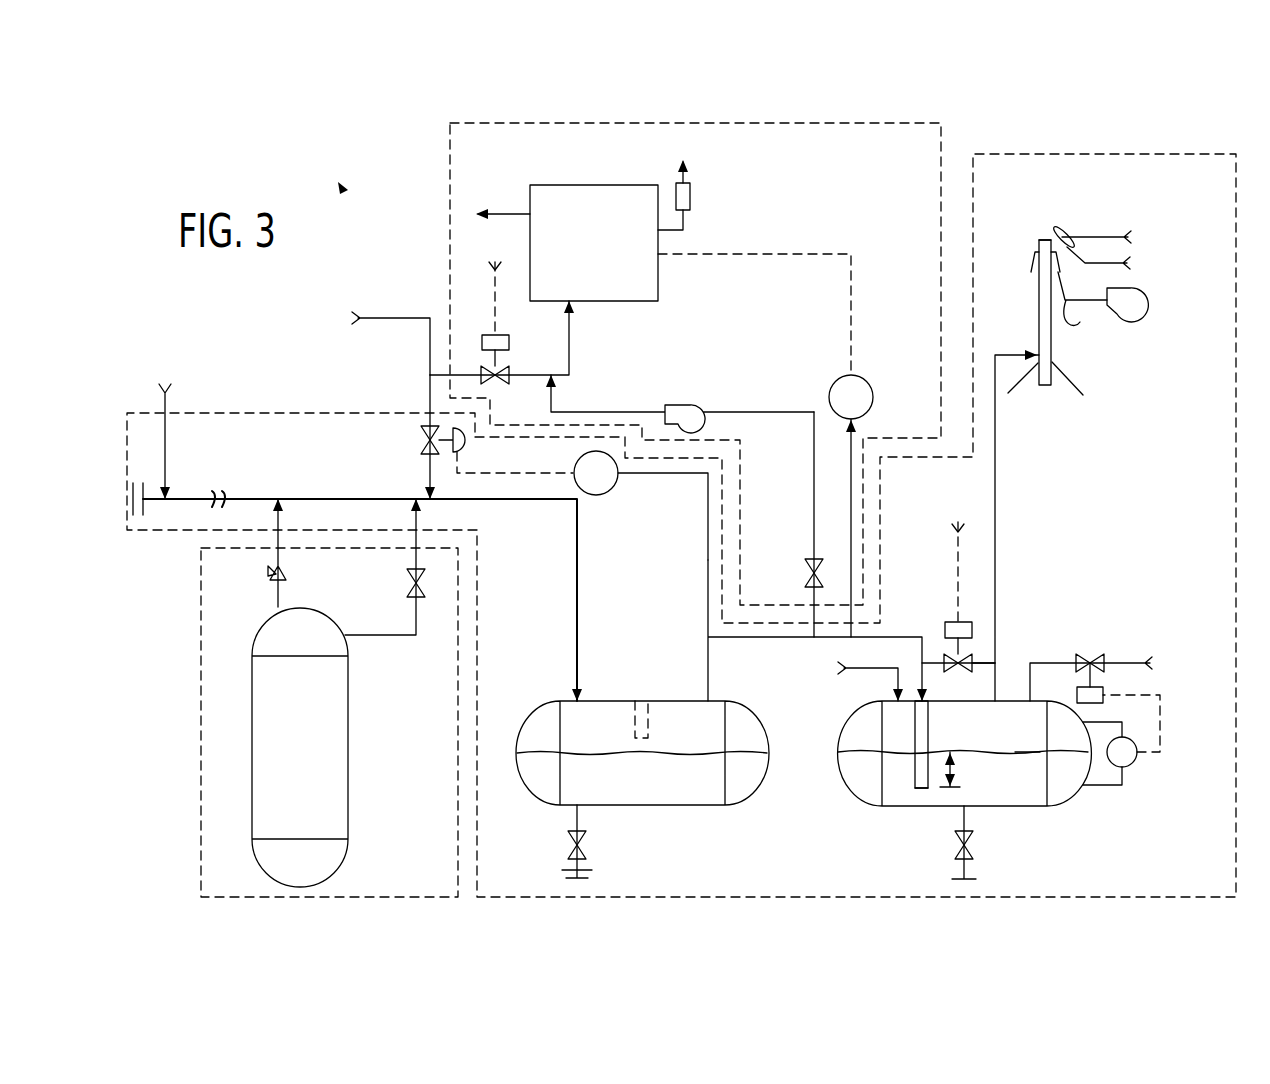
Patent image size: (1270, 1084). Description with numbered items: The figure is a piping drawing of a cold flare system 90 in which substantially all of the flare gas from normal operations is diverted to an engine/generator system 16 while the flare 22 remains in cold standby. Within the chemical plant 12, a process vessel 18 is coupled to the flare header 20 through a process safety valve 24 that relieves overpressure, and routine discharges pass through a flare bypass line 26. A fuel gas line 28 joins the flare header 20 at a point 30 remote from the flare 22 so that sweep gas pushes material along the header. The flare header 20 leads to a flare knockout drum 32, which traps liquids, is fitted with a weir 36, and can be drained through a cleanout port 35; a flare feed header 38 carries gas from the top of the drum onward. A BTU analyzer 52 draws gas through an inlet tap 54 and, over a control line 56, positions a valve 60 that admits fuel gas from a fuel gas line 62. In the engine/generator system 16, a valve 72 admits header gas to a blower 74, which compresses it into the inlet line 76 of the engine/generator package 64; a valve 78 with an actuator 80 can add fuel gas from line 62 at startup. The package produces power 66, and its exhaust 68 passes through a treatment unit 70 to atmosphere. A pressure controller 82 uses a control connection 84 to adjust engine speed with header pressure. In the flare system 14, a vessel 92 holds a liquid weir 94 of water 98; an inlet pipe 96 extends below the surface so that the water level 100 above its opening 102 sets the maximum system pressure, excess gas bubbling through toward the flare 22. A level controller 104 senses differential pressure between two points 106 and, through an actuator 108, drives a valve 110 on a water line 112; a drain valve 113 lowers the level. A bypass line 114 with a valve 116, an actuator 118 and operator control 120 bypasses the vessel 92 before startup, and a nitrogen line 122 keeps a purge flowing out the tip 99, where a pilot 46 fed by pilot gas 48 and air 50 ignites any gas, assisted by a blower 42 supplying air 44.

The chemical plant 12 is at (201, 645).
The flare system 14 is at (1255, 755).
The engine/generator system 16 is at (450, 152).
The process vessel 18 is at (348, 745).
The flare header 20 is at (375, 497).
The flare 22 is at (1038, 312).
The process safety valve 24 is at (298, 570).
The flare bypass line 26 is at (396, 640).
The fuel gas line 28 is at (166, 440).
The point 30 is at (165, 503).
The flare knockout drum 32 is at (567, 698).
The cleanout port 35 is at (590, 852).
The weir 36 is at (641, 698).
The flare feed header 38 is at (708, 660).
The blower 42 is at (1148, 305).
The air 44 is at (1080, 322).
The pilot 46 is at (1060, 236).
The pilot gas 48 is at (1085, 265).
The air 50 is at (1120, 235).
The BTU analyzer 52 is at (596, 495).
The inlet tap 54 is at (670, 478).
The control line 56 is at (533, 476).
The valve 60 is at (424, 440).
The fuel gas line 62 is at (430, 350).
The engine/generator package 64 is at (584, 176).
The power 66 is at (505, 210).
The exhaust 68 is at (665, 234).
The treatment unit 70 is at (690, 195).
The valve 72 is at (808, 580).
The blower 74 is at (677, 403).
The inlet line 76 is at (569, 345).
The valve 78 is at (500, 385).
The actuator 80 is at (509, 340).
The pressure controller 82 is at (873, 397).
The control connection 84 is at (851, 310).
The cold flare system 90 is at (342, 188).
The vessel 92 is at (848, 782).
The liquid weir 94 is at (958, 778).
The inlet pipe 96 is at (914, 778).
The water 98 is at (1010, 785).
The tip 99 is at (1042, 240).
The water level 100 is at (953, 768).
The opening 102 is at (921, 792).
The level controller 104 is at (1135, 762).
The points 106 is at (1085, 770).
The actuator 108 is at (1103, 690).
The valve 110 is at (1100, 655).
The water line 112 is at (1125, 660).
The drain valve 113 is at (968, 858).
The bypass line 114 is at (980, 667).
The valve 116 is at (975, 655).
The actuator 118 is at (945, 625).
The operator control 120 is at (958, 575).
The nitrogen line 122 is at (898, 665).